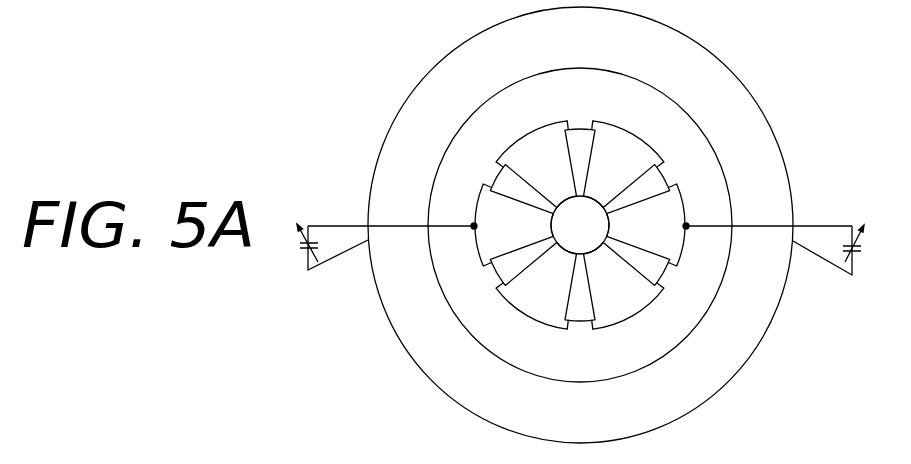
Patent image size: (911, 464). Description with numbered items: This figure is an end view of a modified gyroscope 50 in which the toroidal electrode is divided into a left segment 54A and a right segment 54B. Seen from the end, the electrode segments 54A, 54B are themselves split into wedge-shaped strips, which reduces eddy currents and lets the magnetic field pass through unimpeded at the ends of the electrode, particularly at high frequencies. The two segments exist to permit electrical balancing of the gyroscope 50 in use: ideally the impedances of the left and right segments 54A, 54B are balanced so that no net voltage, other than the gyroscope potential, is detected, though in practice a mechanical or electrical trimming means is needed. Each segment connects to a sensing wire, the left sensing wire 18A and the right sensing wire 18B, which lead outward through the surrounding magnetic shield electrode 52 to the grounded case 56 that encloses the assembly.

The gyroscope 50 is at (462, 33).
The grounded case 56 is at (637, 17).
The magnetic shield electrode 52 is at (458, 323).
The left segment 54A is at (495, 212).
The right segment 54B is at (670, 248).
The left sensing wire 18A is at (400, 227).
The right sensing wire 18B is at (763, 227).